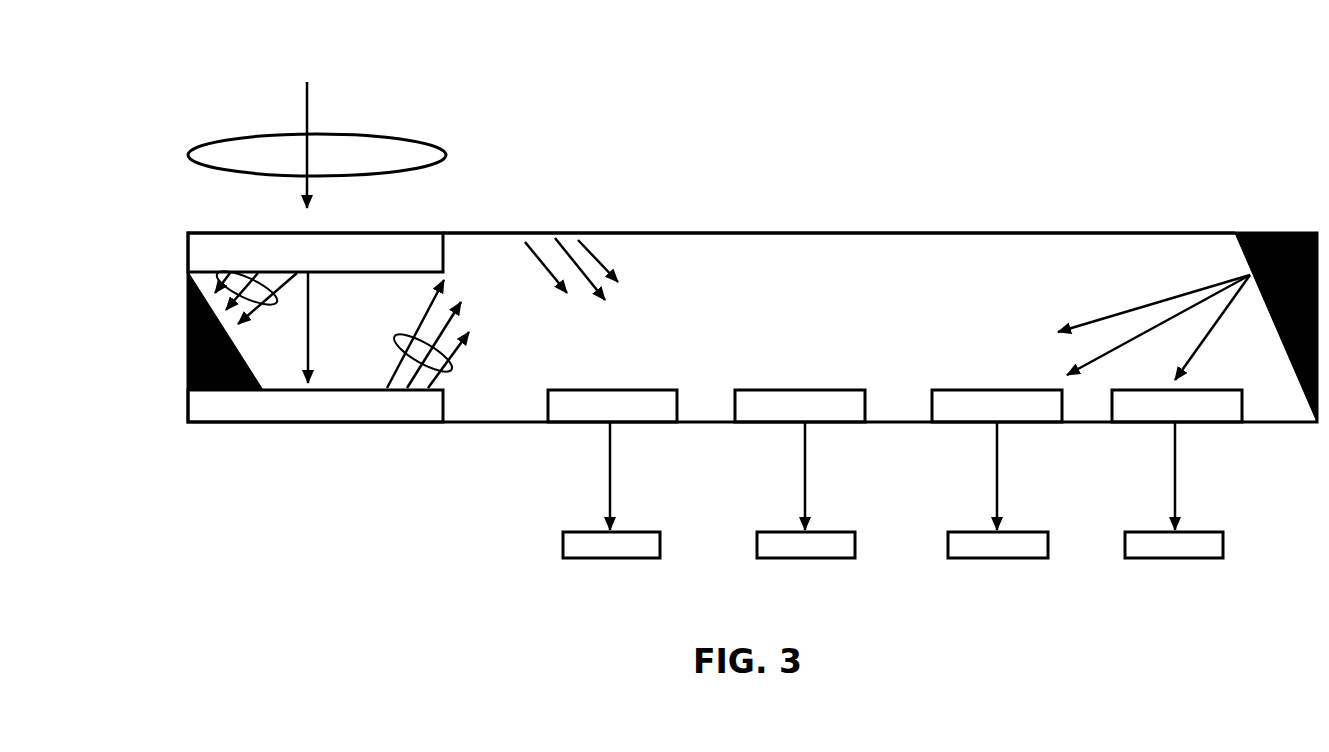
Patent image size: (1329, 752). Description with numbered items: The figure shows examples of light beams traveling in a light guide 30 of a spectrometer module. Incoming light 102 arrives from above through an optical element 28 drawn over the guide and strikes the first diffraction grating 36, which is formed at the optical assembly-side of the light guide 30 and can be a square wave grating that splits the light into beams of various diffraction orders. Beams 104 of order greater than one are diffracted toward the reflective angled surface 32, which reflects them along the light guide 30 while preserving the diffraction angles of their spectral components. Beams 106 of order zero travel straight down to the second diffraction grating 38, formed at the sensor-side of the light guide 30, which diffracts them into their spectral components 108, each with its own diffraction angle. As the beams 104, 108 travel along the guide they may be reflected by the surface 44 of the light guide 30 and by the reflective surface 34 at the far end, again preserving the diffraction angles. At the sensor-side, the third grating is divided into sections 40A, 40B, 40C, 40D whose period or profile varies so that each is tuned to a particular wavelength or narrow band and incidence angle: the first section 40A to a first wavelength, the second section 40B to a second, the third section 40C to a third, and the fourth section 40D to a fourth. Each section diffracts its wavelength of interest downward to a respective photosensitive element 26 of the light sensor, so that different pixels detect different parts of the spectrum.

The photosensitive elements 26 is at (608, 558).
The lens 28 is at (393, 135).
The light guide 30 is at (864, 199).
The reflective angled surface 32 is at (240, 402).
The reflective surface 34 is at (1273, 332).
The first diffraction grating 36 is at (205, 243).
The second diffraction grating 38 is at (307, 412).
The first section of third grating 40A is at (623, 388).
The second section of third grating 40B is at (810, 388).
The third section of third grating 40C is at (1010, 388).
The fourth section of third grating 40D is at (1220, 413).
The surface of the light guide 44 is at (780, 232).
The incoming light 102 is at (302, 103).
The beams of order greater than one 104 is at (233, 277).
The beams of order zero 106 is at (310, 333).
The spectral components 108 is at (453, 368).